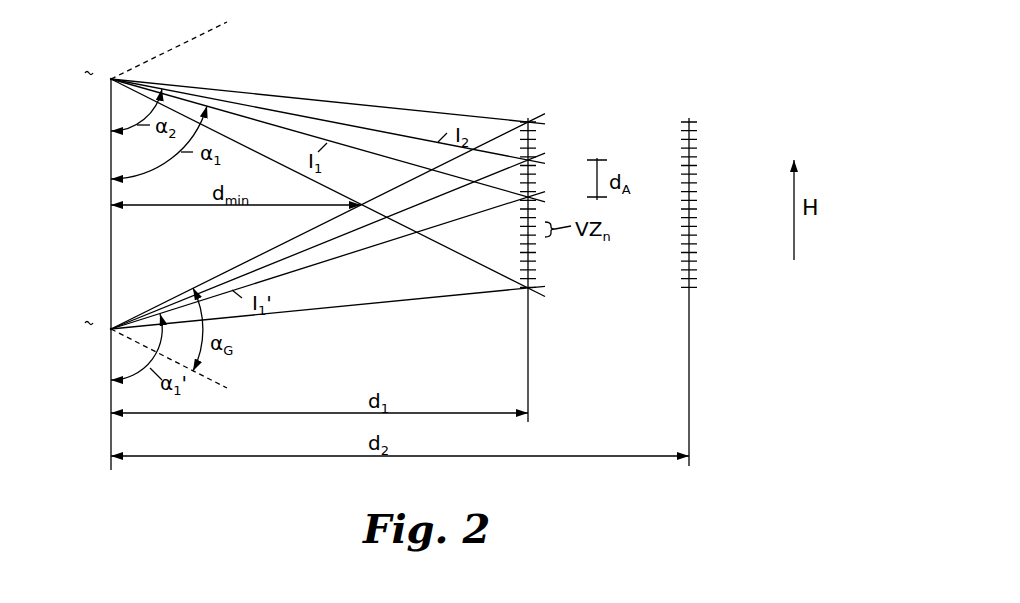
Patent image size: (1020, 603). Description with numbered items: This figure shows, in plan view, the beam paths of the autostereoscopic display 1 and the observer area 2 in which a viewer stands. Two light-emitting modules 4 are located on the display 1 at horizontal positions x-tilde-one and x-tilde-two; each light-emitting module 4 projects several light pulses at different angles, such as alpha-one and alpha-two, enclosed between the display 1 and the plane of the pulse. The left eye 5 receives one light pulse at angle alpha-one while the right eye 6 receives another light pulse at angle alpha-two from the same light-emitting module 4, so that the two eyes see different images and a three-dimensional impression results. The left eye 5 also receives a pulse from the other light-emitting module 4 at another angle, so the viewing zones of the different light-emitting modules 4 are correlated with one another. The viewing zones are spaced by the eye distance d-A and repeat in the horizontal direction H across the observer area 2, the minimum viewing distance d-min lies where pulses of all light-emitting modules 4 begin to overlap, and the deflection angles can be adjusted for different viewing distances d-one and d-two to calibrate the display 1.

The autostereoscopic display 1 is at (107, 231).
The observer area 2 is at (537, 268).
The light-emitting module 4 is at (110, 77).
The left eye 5 is at (537, 200).
The right eye 6 is at (537, 163).